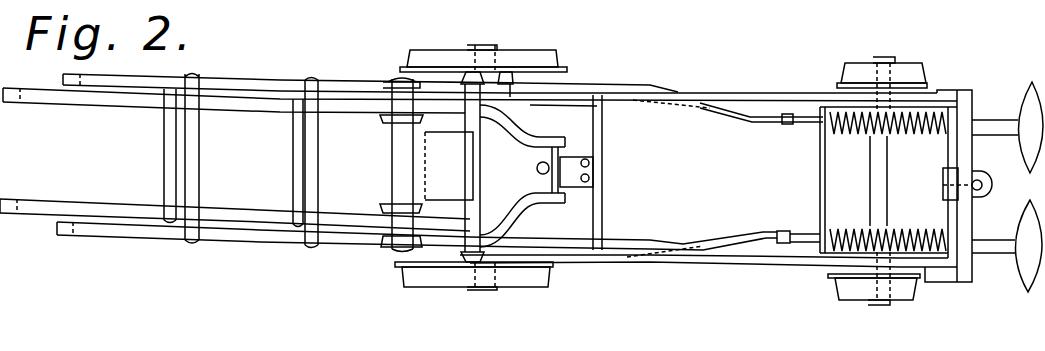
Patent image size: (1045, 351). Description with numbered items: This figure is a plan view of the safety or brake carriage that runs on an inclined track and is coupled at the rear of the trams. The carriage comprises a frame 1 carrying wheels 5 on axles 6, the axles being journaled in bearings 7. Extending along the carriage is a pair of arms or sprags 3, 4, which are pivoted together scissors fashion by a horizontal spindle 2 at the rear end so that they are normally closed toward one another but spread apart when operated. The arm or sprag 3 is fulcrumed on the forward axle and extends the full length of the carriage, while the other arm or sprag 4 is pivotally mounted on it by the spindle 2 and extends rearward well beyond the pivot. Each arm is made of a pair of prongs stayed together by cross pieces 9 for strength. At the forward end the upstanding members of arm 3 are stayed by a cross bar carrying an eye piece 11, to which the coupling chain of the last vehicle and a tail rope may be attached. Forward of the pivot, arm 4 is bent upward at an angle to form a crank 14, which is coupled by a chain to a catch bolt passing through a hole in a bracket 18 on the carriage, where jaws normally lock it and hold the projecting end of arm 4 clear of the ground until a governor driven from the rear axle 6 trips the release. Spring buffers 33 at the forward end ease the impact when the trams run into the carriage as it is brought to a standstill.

The frame 1 is at (598, 89).
The horizontal spindle 2 is at (395, 153).
The arm or sprag 3 is at (263, 236).
The arm or sprag 4 is at (253, 104).
The wheels 5 is at (521, 55).
The axles 6 is at (878, 183).
The bearings 7 is at (840, 88).
The cross pieces 9 is at (198, 157).
The eye piece 11 is at (978, 181).
The crank 14 is at (533, 140).
The bracket 18 is at (575, 182).
The spring buffers 33 is at (1028, 214).